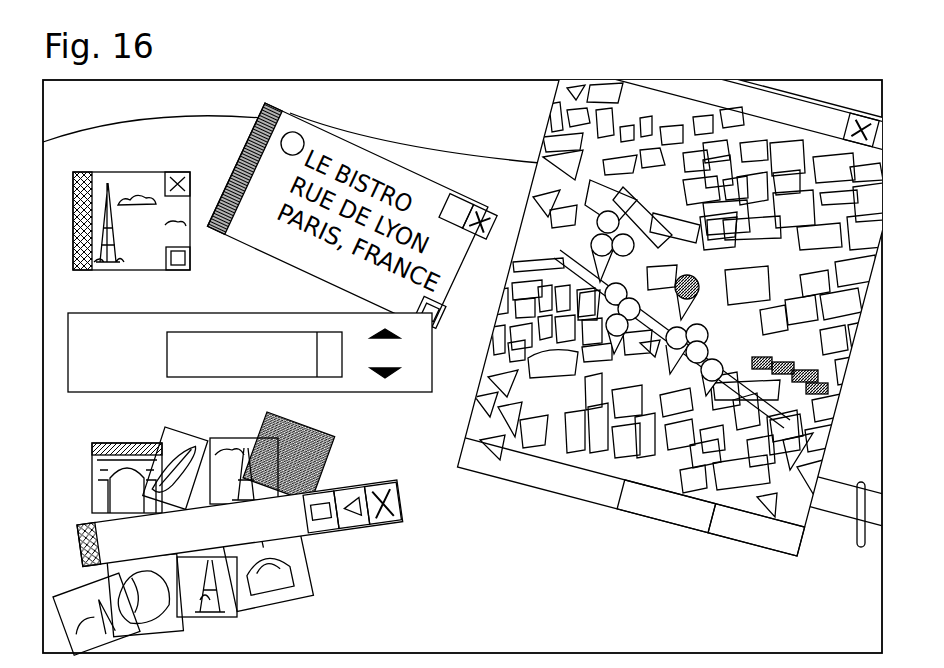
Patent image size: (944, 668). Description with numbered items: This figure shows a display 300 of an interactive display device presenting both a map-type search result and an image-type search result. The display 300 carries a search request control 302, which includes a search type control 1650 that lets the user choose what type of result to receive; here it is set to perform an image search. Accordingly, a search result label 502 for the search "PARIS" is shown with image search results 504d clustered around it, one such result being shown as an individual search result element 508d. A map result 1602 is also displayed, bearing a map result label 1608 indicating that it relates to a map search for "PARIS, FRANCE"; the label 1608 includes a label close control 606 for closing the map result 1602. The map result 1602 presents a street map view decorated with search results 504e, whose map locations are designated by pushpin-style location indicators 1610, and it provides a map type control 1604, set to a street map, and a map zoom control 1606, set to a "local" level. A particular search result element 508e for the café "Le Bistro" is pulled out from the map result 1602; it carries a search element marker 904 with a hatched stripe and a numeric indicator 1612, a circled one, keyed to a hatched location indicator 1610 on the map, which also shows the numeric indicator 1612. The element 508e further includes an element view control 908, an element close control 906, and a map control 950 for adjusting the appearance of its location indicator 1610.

The display 300 is at (831, 77).
The search request control 302 is at (250, 340).
The search result label 502 is at (212, 597).
The search results 504d is at (228, 533).
The search results 504e is at (553, 364).
The search result element 508d is at (109, 162).
The search result element 508e is at (401, 147).
The label close control 606 is at (861, 130).
The search element marker 904 is at (245, 168).
The element close control 906 is at (480, 222).
The element view control 908 is at (430, 312).
The map control 950 is at (456, 211).
The map result 1602 is at (701, 313).
The map type control 1604 is at (756, 530).
The map zoom control 1606 is at (666, 506).
The map result label 1608 is at (736, 97).
The location indicator 1610 is at (747, 285).
The numeric indicator 1612 is at (288, 132).
The search type control 1650 is at (368, 326).